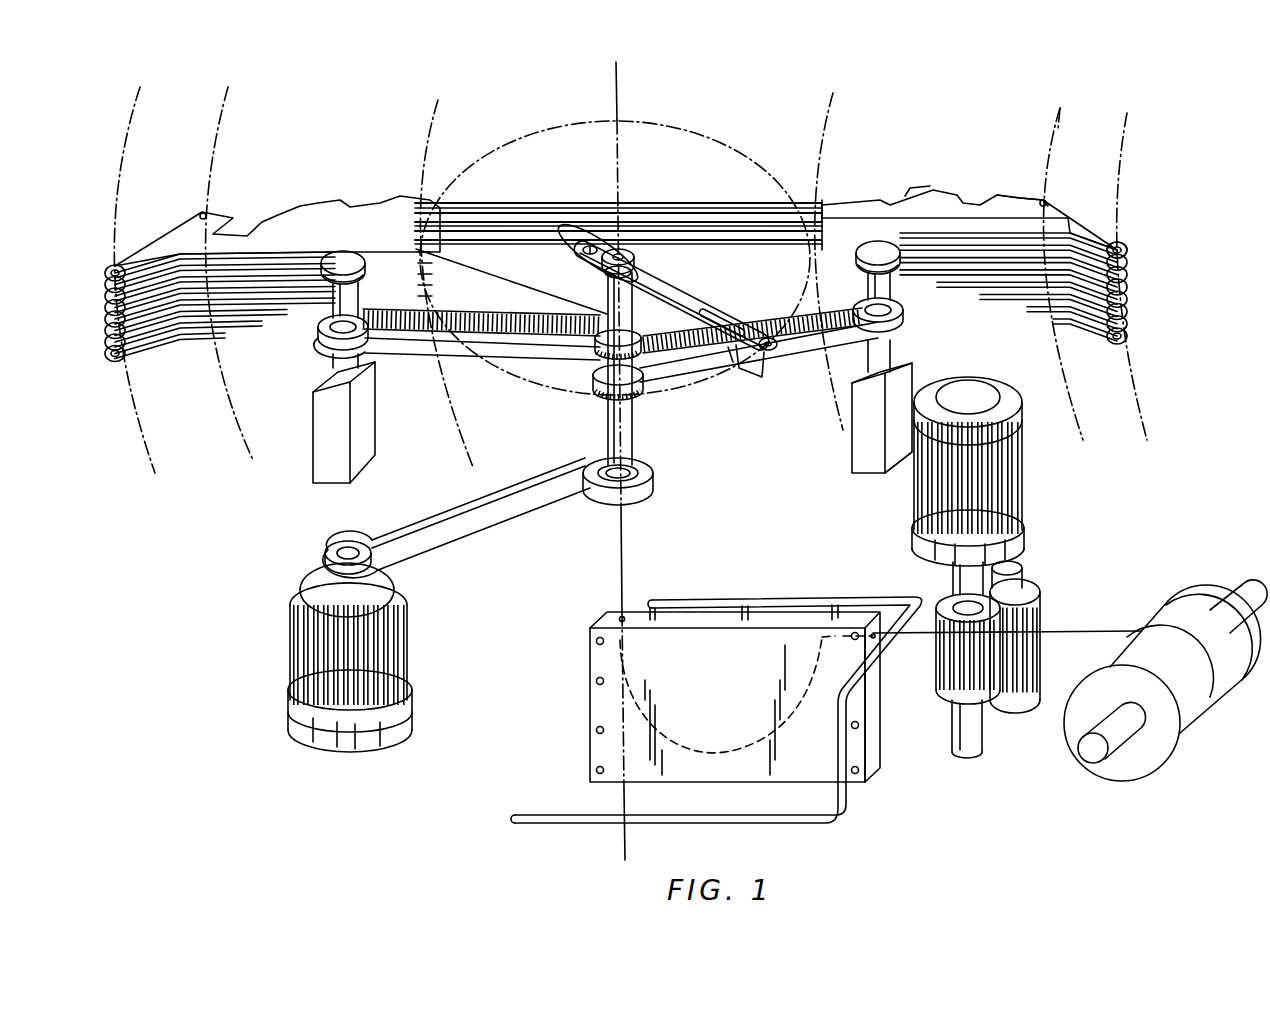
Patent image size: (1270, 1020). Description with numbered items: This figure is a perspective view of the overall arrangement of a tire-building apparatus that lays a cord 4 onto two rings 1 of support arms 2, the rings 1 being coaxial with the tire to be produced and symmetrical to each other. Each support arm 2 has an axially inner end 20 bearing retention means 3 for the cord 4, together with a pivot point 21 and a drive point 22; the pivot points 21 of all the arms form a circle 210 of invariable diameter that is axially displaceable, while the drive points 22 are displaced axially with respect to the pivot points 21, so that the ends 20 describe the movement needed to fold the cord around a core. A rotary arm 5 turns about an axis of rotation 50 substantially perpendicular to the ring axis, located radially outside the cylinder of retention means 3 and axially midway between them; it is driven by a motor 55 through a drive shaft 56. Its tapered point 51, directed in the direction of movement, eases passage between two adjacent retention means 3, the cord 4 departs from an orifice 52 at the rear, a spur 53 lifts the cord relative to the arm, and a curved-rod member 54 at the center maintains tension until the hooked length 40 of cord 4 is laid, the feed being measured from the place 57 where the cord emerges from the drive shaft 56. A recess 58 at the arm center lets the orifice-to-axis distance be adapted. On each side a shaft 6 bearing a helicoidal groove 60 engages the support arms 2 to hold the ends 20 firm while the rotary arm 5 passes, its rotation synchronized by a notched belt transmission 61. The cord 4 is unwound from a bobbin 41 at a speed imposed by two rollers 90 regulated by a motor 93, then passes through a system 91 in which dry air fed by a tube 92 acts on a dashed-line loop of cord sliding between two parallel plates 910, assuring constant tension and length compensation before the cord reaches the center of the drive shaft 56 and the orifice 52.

The ring 1 is at (133, 410).
The support arm 2 is at (1048, 222).
The retention means 3 is at (826, 196).
The cord 4 is at (683, 197).
The rotary arm 5 is at (697, 288).
The shaft 6 is at (330, 362).
The axially inner end 20 is at (898, 188).
The pivot point 21 is at (1042, 199).
The drive point 22 is at (1124, 250).
The length of cord 40 is at (695, 248).
The bobbin 41 is at (1185, 600).
The axis of rotation 50 is at (618, 99).
The tapered point 51 is at (772, 337).
The orifice 52 is at (744, 358).
The spur 53 is at (715, 350).
The member for maintaining tension 54 is at (572, 240).
The motor 55 is at (305, 578).
The drive shaft 56 is at (607, 426).
The place where the cord emerges 57 is at (612, 263).
The recess 58 is at (590, 244).
The helicoidal groove 60 is at (325, 290).
The notched belt transmission 61 is at (460, 358).
The rollers 90 is at (1013, 648).
The tension and length-compensating system 91 is at (592, 703).
The tube 92 is at (856, 790).
The motor 93 is at (1018, 493).
The circle 210 is at (1053, 143).
The parallel plates 910 is at (872, 702).